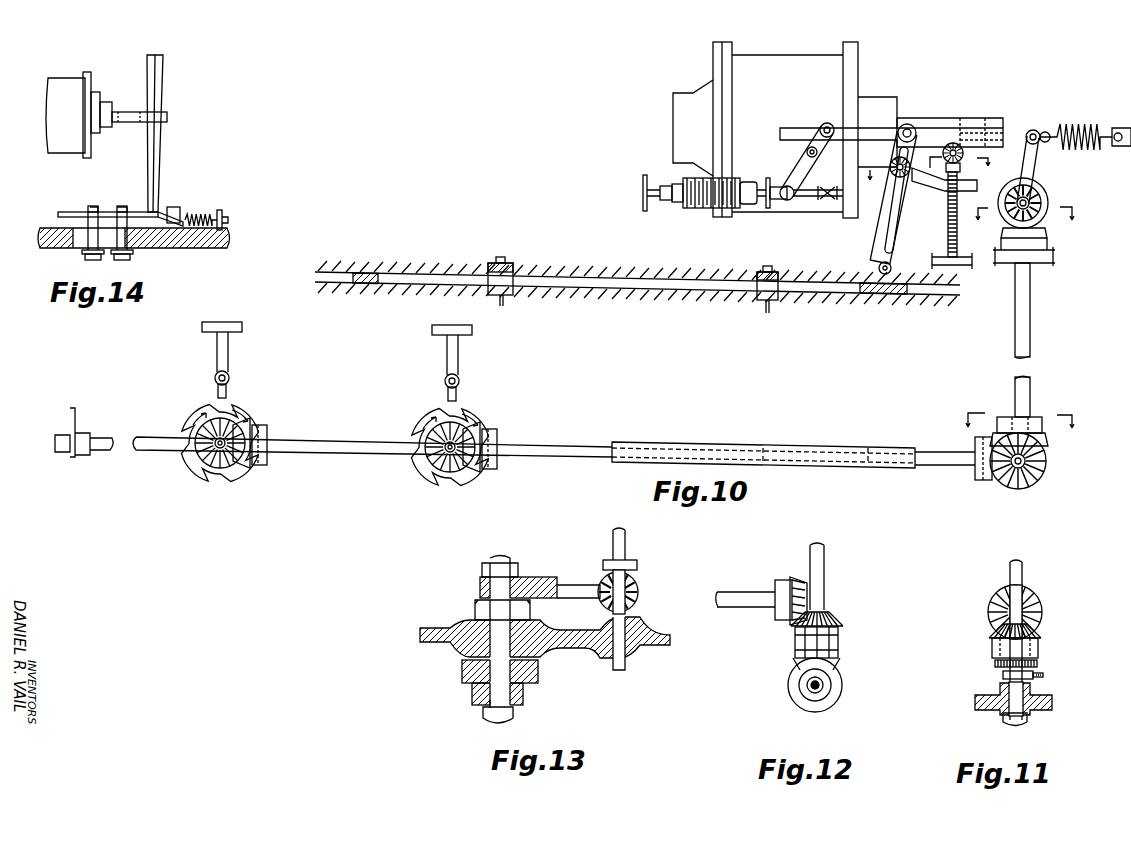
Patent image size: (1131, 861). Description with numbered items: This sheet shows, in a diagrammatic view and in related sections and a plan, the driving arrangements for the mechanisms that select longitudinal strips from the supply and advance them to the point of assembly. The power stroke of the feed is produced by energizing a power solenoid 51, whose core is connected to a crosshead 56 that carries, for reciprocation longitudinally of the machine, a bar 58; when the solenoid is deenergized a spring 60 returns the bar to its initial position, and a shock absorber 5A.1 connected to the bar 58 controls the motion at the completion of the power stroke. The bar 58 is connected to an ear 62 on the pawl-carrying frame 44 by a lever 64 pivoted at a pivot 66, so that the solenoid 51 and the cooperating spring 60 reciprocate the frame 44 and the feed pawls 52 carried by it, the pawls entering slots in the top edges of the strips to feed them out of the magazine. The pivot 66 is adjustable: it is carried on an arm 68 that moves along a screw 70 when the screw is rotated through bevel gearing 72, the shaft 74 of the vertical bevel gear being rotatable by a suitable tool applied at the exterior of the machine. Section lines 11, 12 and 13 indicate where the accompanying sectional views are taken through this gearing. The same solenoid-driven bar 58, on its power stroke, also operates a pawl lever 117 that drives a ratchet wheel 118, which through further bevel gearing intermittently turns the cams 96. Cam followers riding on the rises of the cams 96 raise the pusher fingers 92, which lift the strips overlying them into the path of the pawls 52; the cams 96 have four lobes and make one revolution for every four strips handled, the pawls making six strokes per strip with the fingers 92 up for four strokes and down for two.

In FIG. 14, the power solenoid 51 is at (57, 78).
In FIG. 10, the power solenoid 51 is at (858, 72).
In FIG. 14, the crosshead 56 is at (167, 138).
In FIG. 14, the bar 58 is at (73, 212).
In FIG. 10, the bar 58 is at (1020, 127).
In FIG. 14, the spring 60 is at (207, 210).
In FIG. 10, the spring 60 is at (1095, 122).
In FIG. 14, the lever 64 is at (130, 254).
In FIG. 10, the lever 64 is at (878, 230).
In FIG. 13, the lever 64 is at (460, 669).
In FIG. 10, the shock absorber 5A.1 is at (690, 208).
In FIG. 10, the ear 62 is at (897, 266).
In FIG. 10, the pivot 66 is at (905, 160).
In FIG. 13, the pivot 66 is at (500, 690).
In FIG. 10, the bevel gearing 72 is at (957, 147).
In FIG. 13, the bevel gearing 72 is at (639, 592).
In FIG. 10, the arm 68 is at (930, 189).
In FIG. 13, the arm 68 is at (545, 582).
In FIG. 10, the screw 70 is at (958, 206).
In FIG. 13, the shaft 74 is at (626, 665).
In FIG. 10, the section line 13 is at (926, 178).
In FIG. 10, the section line 11 is at (1029, 223).
In FIG. 10, the section line 12 is at (1003, 376).
In FIG. 10, the pawl lever 117 is at (1042, 163).
In FIG. 11, the pawl lever 117 is at (1045, 676).
In FIG. 10, the ratchet wheel 118 is at (1046, 196).
In FIG. 11, the ratchet wheel 118 is at (1040, 662).
In FIG. 10, the pawl-carrying frame 44 is at (632, 294).
In FIG. 10, the pawl 52 is at (503, 298).
In FIG. 10, the pusher finger 92 is at (244, 329).
In FIG. 10, the cam 96 is at (258, 410).